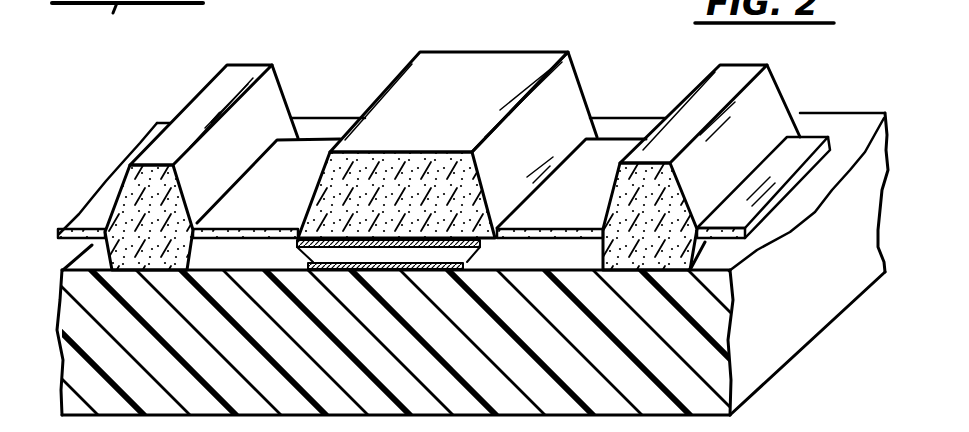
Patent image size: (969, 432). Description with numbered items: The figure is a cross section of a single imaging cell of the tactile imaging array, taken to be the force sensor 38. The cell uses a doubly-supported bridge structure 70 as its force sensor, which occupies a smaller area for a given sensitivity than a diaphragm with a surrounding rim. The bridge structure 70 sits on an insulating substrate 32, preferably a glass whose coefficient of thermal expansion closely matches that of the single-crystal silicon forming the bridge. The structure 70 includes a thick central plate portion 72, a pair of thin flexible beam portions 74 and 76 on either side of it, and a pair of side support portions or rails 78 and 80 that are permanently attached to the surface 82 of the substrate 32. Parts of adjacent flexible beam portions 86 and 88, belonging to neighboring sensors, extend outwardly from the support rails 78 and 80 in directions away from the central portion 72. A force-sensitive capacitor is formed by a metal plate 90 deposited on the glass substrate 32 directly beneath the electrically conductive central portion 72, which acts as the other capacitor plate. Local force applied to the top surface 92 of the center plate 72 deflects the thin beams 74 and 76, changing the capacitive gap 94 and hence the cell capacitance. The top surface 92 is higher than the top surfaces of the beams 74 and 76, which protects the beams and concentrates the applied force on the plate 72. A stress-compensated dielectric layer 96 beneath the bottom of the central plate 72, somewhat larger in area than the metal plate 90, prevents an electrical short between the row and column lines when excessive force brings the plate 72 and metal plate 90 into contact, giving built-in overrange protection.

The insulating substrate 32 is at (800, 274).
The sensor 38 is at (805, 377).
The doubly-supported bridge structure 70 is at (196, 61).
The central plate portion 72 is at (472, 123).
The flexible beam portion 74 is at (292, 171).
The flexible beam portion 76 is at (590, 178).
The side support portion or rail 78 is at (230, 90).
The side support portion or rail 80 is at (703, 100).
The surface of the support substrate 82 is at (68, 266).
The adjacent flexible beam portion 86 is at (158, 124).
The adjacent flexible beam portion 88 is at (803, 147).
The metal plate 90 is at (336, 272).
The top surface of the central plate 92 is at (424, 100).
The capacitive gap 94 is at (486, 254).
The stress-compensated dielectric layer 96 is at (302, 246).